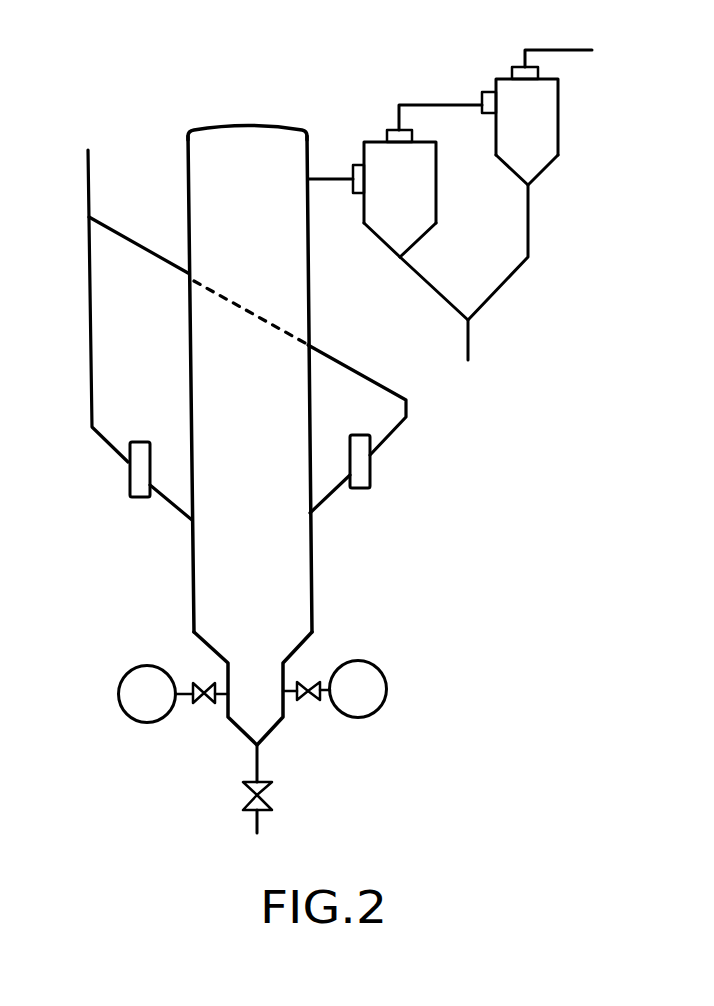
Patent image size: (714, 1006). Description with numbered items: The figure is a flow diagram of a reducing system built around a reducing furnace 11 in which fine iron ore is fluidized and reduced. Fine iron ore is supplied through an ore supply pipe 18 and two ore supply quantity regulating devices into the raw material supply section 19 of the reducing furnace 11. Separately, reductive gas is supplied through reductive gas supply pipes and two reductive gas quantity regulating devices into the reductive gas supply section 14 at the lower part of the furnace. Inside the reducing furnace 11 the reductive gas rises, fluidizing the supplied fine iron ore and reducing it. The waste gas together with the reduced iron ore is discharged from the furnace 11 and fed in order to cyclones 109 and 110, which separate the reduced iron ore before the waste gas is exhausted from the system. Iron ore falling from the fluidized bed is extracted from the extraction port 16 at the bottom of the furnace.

The reducing furnace 11 is at (470, 346).
The reductive gas supply section 14 is at (257, 692).
The extraction port 16 is at (258, 771).
The ore supply pipe 18 is at (88, 181).
The raw material supply section 19 is at (247, 518).
The cyclone 109 is at (437, 199).
The cyclone 110 is at (559, 129).